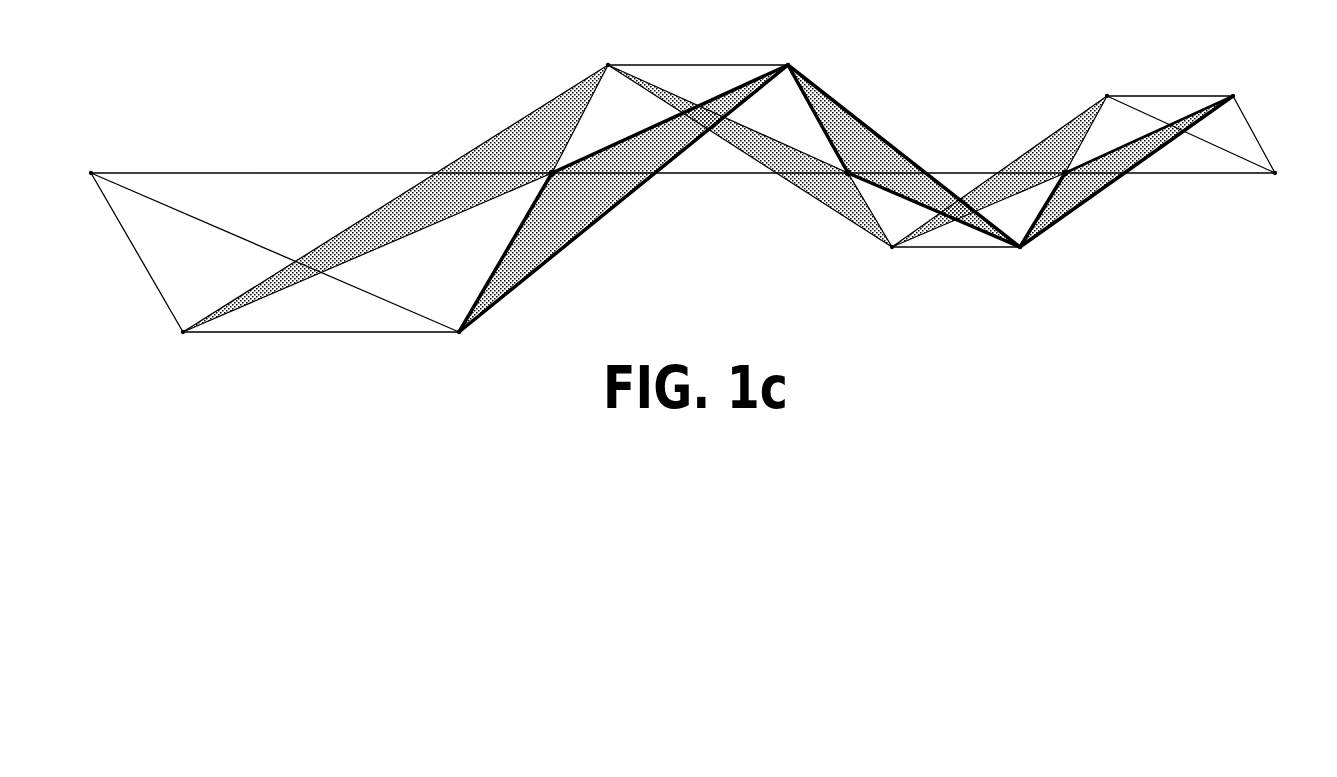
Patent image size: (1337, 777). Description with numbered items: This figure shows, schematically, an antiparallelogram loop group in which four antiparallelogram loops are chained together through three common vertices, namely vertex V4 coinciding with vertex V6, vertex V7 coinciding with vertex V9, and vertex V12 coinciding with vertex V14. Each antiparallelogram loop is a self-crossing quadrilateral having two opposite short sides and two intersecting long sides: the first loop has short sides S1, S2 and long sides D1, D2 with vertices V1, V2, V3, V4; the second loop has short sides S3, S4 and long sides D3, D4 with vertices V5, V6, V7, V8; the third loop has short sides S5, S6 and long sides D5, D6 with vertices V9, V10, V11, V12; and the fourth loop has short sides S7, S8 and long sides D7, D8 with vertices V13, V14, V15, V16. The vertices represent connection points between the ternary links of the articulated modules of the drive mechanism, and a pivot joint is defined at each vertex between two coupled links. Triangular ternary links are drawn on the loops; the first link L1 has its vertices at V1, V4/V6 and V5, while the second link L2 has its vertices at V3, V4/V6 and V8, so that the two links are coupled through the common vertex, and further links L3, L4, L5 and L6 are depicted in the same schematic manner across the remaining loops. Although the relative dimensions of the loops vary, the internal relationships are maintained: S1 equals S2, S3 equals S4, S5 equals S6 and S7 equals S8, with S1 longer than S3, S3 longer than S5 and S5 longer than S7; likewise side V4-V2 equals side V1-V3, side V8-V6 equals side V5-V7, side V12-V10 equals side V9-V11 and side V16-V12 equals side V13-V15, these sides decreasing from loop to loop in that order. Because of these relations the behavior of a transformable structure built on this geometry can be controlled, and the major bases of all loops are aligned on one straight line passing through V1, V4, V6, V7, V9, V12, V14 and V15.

The vertex V1 is at (69, 173).
The vertex V2 is at (162, 341).
The vertex V3 is at (476, 348).
The common vertex V4 is at (556, 178).
The vertex V5 is at (608, 45).
The common vertex V6 is at (626, 235).
The common vertex V7 is at (845, 179).
The vertex V8 is at (792, 46).
The common vertex V9 is at (821, 232).
The vertex V10 is at (904, 267).
The vertex V11 is at (1015, 266).
The common vertex V12 is at (1069, 178).
The vertex V13 is at (1107, 78).
The common vertex V14 is at (1128, 222).
The vertex V15 is at (1302, 174).
The vertex V16 is at (1250, 79).
The short side S1 is at (147, 268).
The short side S2 is at (490, 276).
The short side S3 is at (576, 118).
The short side S4 is at (820, 112).
The short side S5 is at (869, 221).
The short side S6 is at (1047, 230).
The short side S7 is at (1077, 123).
The short side S8 is at (1262, 145).
The long side D1 is at (240, 238).
The long side D2 is at (377, 250).
The long side D3 is at (797, 125).
The long side D4 is at (624, 141).
The long side D5 is at (914, 172).
The long side D6 is at (988, 204).
The long side D7 is at (1130, 108).
The long side D8 is at (1192, 110).
The ternary link L1 is at (493, 137).
The ternary link L2 is at (623, 202).
The ternary link L3 is at (788, 185).
The ternary link L4 is at (860, 121).
The ternary link L5 is at (1040, 143).
The ternary link L6 is at (1120, 180).